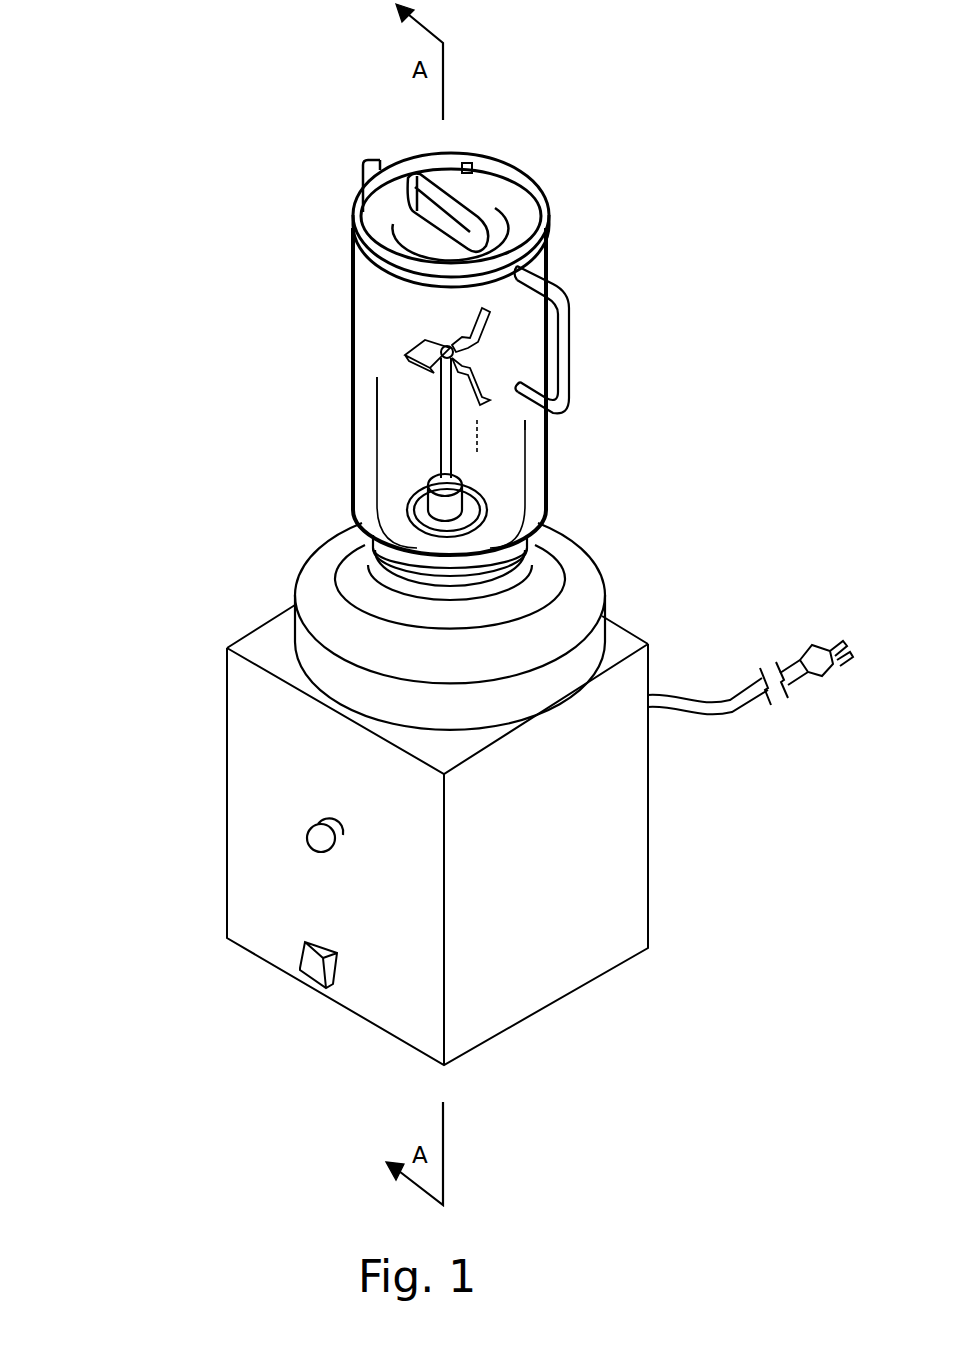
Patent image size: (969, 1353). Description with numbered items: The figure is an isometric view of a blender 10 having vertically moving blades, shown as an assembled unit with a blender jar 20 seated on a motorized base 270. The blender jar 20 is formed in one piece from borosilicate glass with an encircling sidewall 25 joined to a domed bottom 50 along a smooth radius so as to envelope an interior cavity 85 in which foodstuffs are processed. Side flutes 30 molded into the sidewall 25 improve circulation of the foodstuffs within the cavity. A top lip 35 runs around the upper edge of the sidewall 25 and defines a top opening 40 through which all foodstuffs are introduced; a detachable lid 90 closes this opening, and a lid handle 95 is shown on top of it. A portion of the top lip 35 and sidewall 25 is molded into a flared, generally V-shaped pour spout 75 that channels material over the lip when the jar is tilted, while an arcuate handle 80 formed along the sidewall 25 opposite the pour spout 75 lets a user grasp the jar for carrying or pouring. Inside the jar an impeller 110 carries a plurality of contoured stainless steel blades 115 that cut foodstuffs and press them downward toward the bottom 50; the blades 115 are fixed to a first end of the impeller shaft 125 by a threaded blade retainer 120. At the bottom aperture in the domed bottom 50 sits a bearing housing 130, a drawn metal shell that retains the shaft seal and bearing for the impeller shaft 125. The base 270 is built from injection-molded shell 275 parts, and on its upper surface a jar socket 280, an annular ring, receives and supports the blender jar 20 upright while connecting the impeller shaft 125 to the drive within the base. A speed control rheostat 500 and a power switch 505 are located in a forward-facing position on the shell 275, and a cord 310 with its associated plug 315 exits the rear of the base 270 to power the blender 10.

The blender 10 is at (135, 207).
The blender jar 20 is at (232, 423).
The sidewall 25 is at (549, 460).
The side flutes 30 is at (477, 452).
The top lip 35 is at (545, 197).
The top opening 40 is at (469, 165).
The domed bottom 50 is at (356, 534).
The pour spout 75 is at (365, 168).
The arcuate handle 80 is at (572, 352).
The interior cavity 85 is at (376, 296).
The detachable lid 90 is at (508, 208).
The lid handle 95 is at (408, 205).
The impeller 110 is at (385, 360).
The blades 115 is at (463, 378).
The threaded blade retainer 120 is at (440, 348).
The impeller shaft 125 is at (445, 418).
The bearing housing 130 is at (452, 507).
The motorized base 270 is at (692, 642).
The shell 275 is at (612, 745).
The jar socket 280 is at (490, 573).
The cord 310 is at (737, 700).
The plug 315 is at (818, 667).
The speed control rheostat 500 is at (312, 832).
The power switch 505 is at (315, 972).